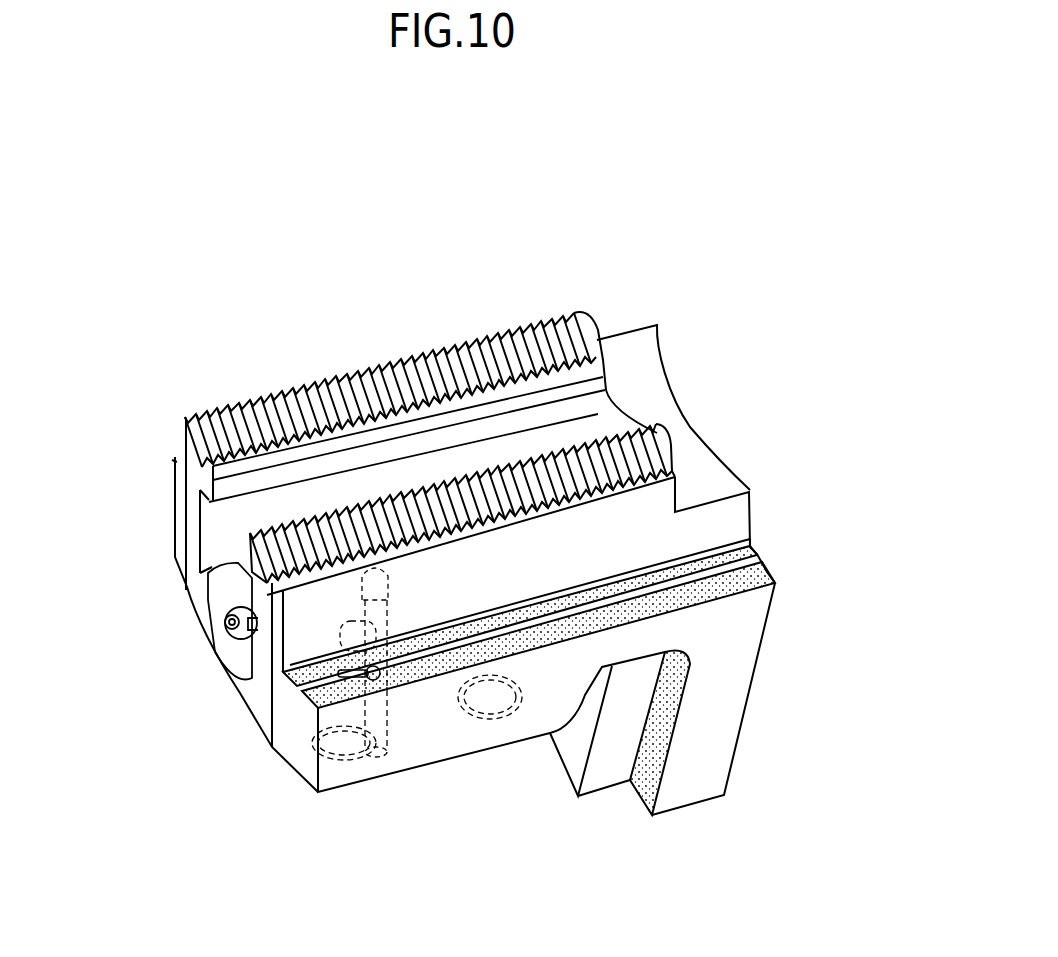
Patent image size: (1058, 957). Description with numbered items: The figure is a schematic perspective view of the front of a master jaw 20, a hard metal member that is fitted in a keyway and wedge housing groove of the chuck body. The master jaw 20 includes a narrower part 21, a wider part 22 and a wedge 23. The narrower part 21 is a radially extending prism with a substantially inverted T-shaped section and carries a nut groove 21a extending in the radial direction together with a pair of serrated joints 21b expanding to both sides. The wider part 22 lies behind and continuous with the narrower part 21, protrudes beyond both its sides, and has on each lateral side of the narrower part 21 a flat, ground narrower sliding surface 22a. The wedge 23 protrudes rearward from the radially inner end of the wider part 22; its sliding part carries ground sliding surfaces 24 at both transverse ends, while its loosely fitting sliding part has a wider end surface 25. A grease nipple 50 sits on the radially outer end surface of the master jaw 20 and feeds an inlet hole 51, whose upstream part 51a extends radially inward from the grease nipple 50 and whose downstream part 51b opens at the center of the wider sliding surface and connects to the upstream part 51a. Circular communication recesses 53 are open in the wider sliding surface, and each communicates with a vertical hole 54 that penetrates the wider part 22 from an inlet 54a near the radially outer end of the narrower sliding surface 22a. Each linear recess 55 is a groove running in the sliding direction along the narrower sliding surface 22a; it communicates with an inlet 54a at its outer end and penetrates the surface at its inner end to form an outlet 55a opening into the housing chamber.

The master jaw 20 is at (563, 225).
The narrower part 21 is at (643, 533).
The nut groove 21a is at (220, 528).
The serrated joints 21b is at (263, 392).
The wider part 22 is at (437, 740).
The narrower sliding surface 22a is at (174, 461).
The wedge 23 is at (733, 698).
The sliding surface 24 is at (650, 757).
The wider end surface 25 is at (565, 757).
The grease nipple 50 is at (226, 624).
The inlet hole 51 is at (397, 597).
The upstream part 51a is at (258, 597).
The downstream part 51b is at (258, 639).
The communication recess 53 is at (312, 752).
The vertical hole 54 is at (397, 728).
The inlet 54a is at (316, 706).
The linear recess 55 is at (740, 602).
The outlet 55a is at (758, 556).